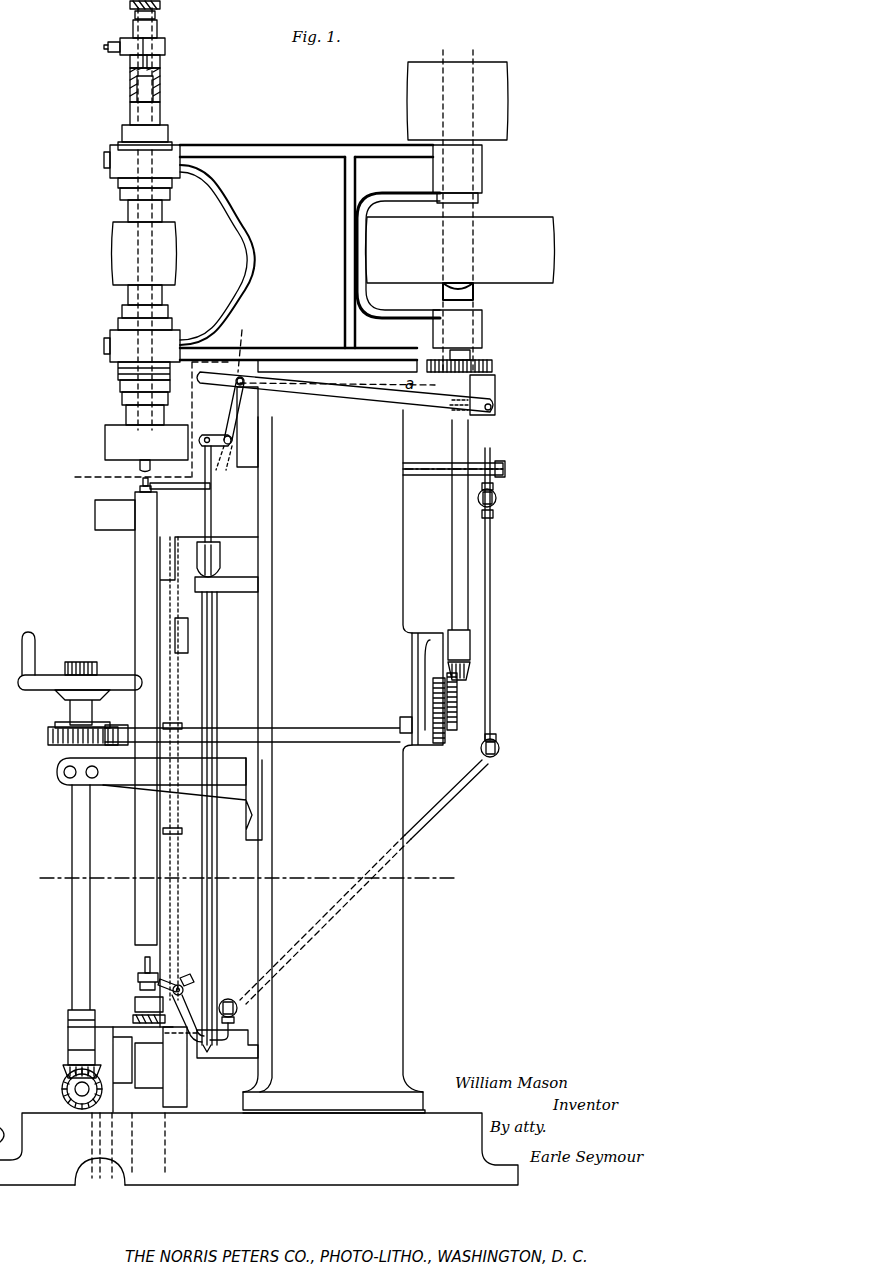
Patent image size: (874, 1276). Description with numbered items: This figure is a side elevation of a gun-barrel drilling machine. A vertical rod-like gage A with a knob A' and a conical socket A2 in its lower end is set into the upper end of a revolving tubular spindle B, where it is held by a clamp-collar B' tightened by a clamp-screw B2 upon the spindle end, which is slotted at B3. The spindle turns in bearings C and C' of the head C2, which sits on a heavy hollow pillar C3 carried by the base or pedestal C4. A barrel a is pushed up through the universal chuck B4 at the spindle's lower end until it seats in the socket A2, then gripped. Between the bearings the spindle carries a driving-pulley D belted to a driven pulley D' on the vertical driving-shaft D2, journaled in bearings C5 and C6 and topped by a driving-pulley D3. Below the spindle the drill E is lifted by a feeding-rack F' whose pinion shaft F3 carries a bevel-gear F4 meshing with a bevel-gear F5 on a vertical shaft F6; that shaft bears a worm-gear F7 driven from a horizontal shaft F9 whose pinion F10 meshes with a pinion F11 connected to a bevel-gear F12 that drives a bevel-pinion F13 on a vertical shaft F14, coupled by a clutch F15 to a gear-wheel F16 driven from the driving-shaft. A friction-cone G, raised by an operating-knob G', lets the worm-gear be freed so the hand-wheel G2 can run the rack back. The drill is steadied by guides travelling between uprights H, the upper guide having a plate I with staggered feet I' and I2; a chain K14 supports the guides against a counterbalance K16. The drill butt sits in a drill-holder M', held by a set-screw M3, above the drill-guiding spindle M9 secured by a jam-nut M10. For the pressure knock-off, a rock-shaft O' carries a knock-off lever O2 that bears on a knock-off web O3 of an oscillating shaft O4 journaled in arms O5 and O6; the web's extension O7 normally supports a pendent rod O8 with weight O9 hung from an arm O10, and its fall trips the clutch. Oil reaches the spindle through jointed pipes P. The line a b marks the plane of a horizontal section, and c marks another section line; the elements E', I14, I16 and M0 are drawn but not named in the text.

The gage A is at (157, 27).
The knob A' is at (157, 9).
The conical socket A2 is at (130, 80).
The tubular spindle B is at (131, 66).
The clamp-collar B' is at (156, 45).
The clamp-screw B2 is at (115, 52).
The slot B3 is at (160, 62).
The universal chuck B4 is at (139, 442).
The bearing C is at (142, 161).
The bearing C' is at (142, 346).
The head C2 is at (306, 252).
The hollow pillar C3 is at (331, 736).
The base or pedestal C4 is at (259, 1149).
The bearing C5 is at (482, 180).
The bearing C6 is at (482, 334).
The driving-pulley D is at (154, 290).
The driven pulley D' is at (460, 250).
The driving-shaft D2 is at (473, 298).
The driving-pulley D3 is at (507, 78).
The drill E is at (128, 961).
The rod support E' is at (120, 1008).
The feeding-rack F' is at (45, 1051).
The horizontal shaft F3 is at (62, 1086).
The bevel-gear F4 is at (64, 1098).
The bevel-gear F5 is at (63, 1070).
The vertical shaft F6 is at (72, 978).
The worm-gear F7 is at (48, 736).
The horizontal shaft F9 is at (293, 735).
The pinion F10 is at (437, 748).
The pinion F11 is at (430, 693).
The bevel-gear F12 is at (457, 708).
The bevel-pinion F13 is at (470, 673).
The vertically-arranged shaft F14 is at (468, 622).
The clutch F15 is at (495, 398).
The gear-wheel F16 is at (492, 366).
The friction-cone G is at (76, 713).
The operating-knob G' is at (81, 656).
The hand-wheel G2 is at (18, 685).
The upright H is at (135, 622).
The plate I is at (236, 411).
The foot I' is at (239, 342).
The foot I2 is at (355, 395).
The cross bar I14 is at (180, 494).
The pivot pin I16 is at (236, 388).
The chain K14 is at (178, 683).
The counterbalance K16 is at (188, 635).
The drill-holder M' is at (149, 1004).
The cam base M0 is at (149, 1026).
The set-screw M3 is at (138, 978).
The drill-guiding spindle M9 is at (150, 1080).
The jam-nut M10 is at (170, 982).
The rock-shaft O' is at (205, 980).
The knock-off lever O2 is at (190, 1012).
The knock-off web O3 is at (212, 938).
The oscillating shaft O4 is at (217, 908).
The arm O5 is at (240, 588).
The arm O6 is at (228, 1058).
The horizontal extension O7 is at (217, 606).
The pendent rod O8 is at (211, 510).
The weight O9 is at (220, 552).
The arm O10 is at (215, 430).
The jointed pipes P is at (447, 800).
The barrel a is at (140, 468).
The section line b is at (245, 878).
The section line c is at (127, 476).